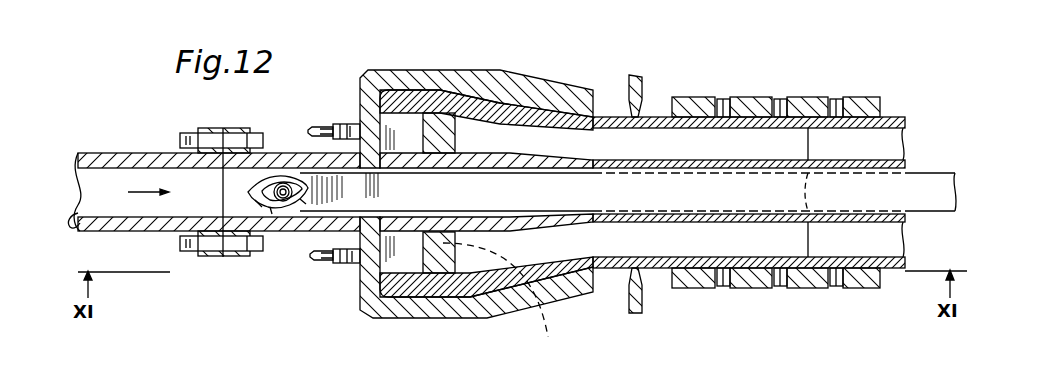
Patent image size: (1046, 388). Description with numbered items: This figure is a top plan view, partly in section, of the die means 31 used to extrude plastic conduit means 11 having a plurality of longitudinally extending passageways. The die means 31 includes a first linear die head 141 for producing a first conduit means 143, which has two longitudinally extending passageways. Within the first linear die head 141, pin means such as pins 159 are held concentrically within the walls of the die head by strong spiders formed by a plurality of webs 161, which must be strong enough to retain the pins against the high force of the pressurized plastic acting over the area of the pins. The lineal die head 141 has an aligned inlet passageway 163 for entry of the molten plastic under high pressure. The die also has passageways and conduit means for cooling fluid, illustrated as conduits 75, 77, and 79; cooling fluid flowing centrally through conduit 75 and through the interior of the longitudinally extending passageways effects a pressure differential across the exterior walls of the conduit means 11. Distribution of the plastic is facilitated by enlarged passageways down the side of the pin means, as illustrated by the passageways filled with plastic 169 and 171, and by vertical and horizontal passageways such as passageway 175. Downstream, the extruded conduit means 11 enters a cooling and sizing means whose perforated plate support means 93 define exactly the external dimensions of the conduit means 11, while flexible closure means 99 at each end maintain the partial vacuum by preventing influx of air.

The conduit means 11 is at (620, 270).
The die means 31 is at (564, 72).
The conduit means for cooling fluid 75 is at (287, 207).
The conduit for cooling fluid 77 is at (280, 207).
The conduit for cooling fluid 79 is at (258, 200).
The perforated plate support means 93 is at (730, 288).
The flexible closure means 99 is at (641, 110).
The first linear die head 141 is at (300, 176).
The first conduit means 143 is at (917, 163).
The pins 159 is at (223, 128).
The webs 161 is at (260, 183).
The aligned inlet passageway 163 is at (142, 166).
The passageway filled with plastic 169 is at (448, 103).
The passageway filled with plastic 171 is at (453, 292).
The passageway 175 is at (505, 302).